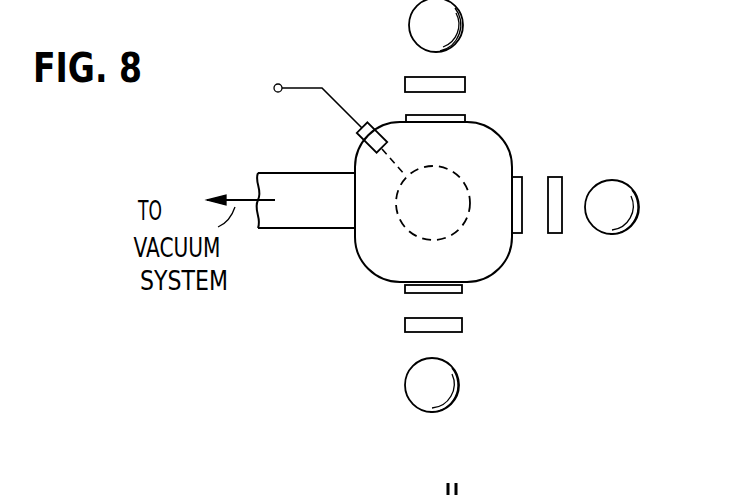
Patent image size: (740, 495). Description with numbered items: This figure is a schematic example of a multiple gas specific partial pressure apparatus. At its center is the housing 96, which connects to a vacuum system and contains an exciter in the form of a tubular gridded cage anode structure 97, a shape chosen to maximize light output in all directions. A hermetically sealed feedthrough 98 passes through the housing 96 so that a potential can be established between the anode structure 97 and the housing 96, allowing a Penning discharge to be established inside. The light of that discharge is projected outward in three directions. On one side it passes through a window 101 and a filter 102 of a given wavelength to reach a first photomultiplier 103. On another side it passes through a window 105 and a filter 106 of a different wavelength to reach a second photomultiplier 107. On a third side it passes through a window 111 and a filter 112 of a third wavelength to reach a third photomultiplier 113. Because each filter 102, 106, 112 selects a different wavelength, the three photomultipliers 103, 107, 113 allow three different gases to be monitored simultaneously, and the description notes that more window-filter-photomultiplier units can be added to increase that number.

The housing 96 is at (373, 272).
The tubular gridded cage anode structure 97 is at (397, 215).
The hermetically sealed feedthrough 98 is at (357, 133).
The window 101 is at (462, 290).
The filter 102 is at (457, 328).
The first photomultiplier 103 is at (458, 390).
The window 105 is at (465, 116).
The filter 106 is at (465, 80).
The second photomultiplier 107 is at (463, 27).
The window 111 is at (518, 235).
The filter 112 is at (557, 235).
The third photomultiplier 113 is at (622, 232).